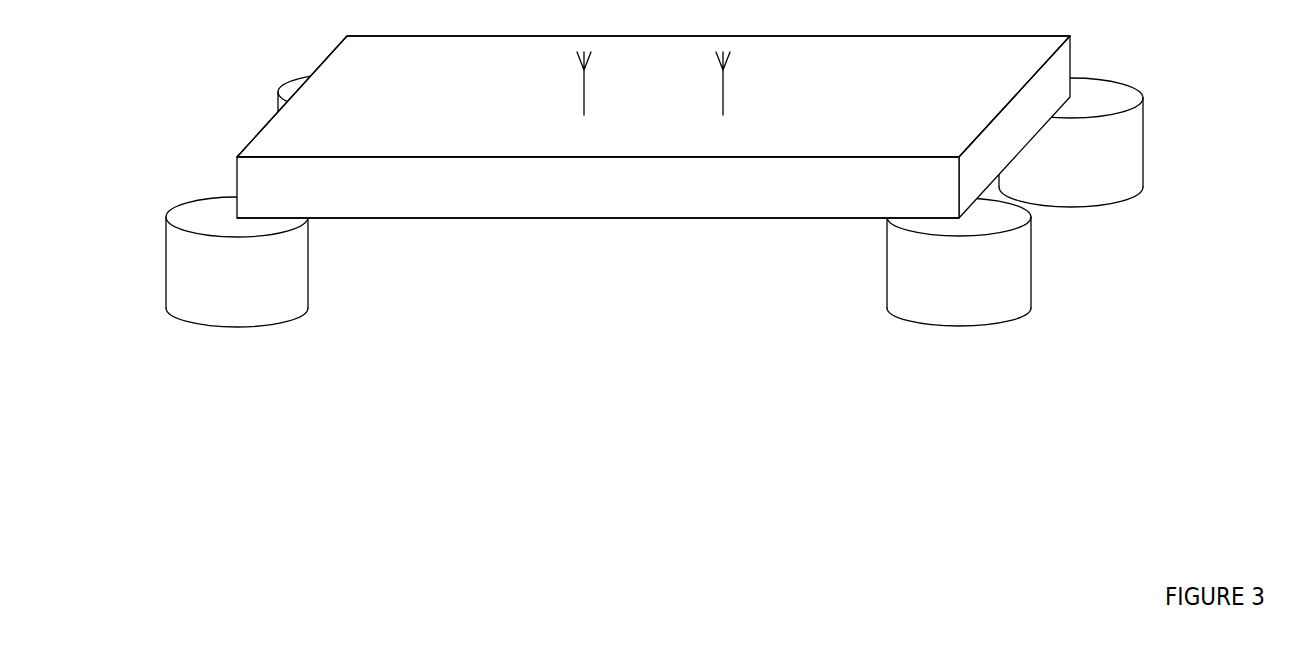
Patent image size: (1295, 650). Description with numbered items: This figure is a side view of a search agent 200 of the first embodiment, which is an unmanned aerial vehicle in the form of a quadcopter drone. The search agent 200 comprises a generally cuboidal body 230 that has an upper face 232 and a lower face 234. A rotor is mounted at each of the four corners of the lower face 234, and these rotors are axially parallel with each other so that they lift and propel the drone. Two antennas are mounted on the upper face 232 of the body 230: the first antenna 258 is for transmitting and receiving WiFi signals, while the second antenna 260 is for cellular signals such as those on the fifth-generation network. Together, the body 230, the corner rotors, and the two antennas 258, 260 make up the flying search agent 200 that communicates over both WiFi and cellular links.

The search agent 200 is at (516, 409).
The body 230 is at (619, 203).
The upper face 232 is at (377, 113).
The lower face 234 is at (445, 218).
The first antenna 258 is at (584, 115).
The second antenna 260 is at (723, 112).